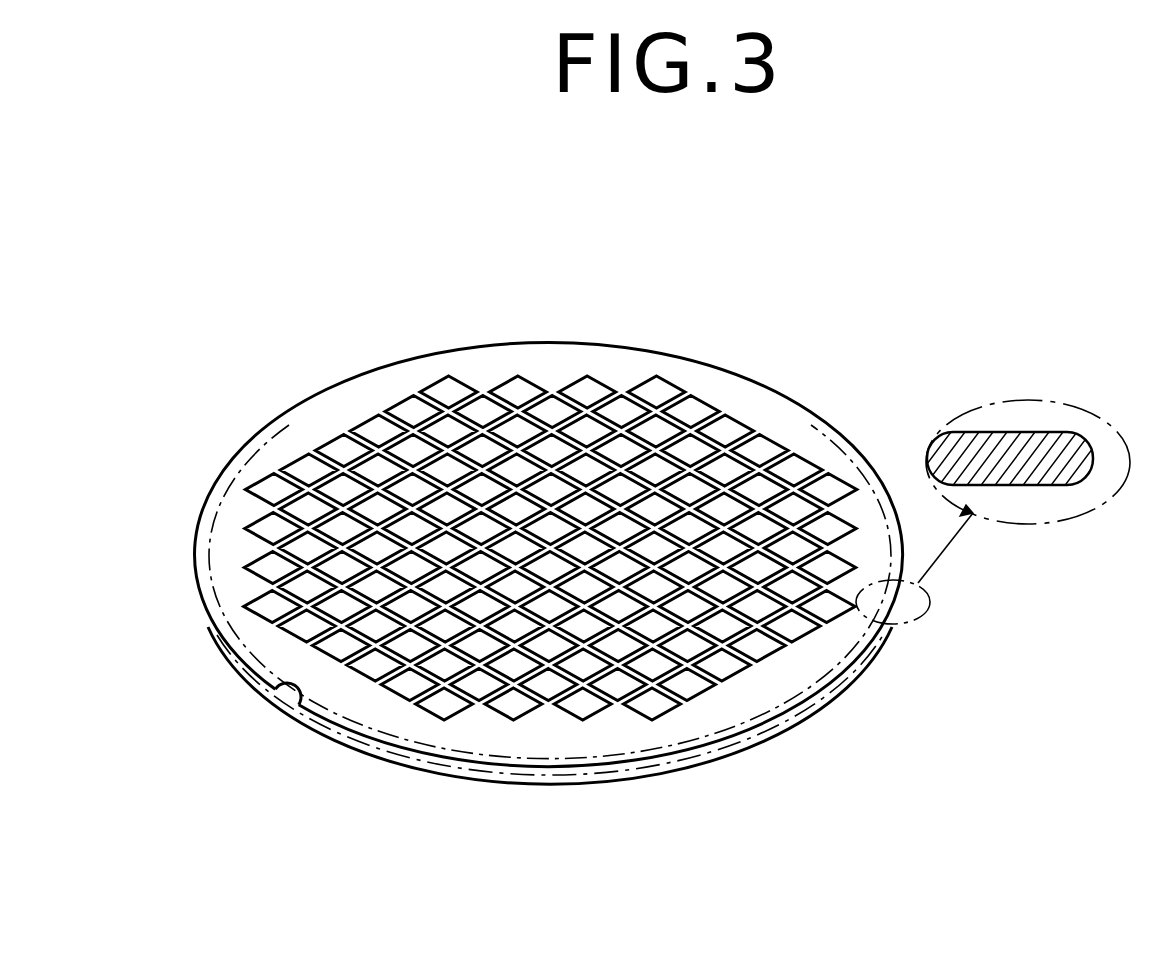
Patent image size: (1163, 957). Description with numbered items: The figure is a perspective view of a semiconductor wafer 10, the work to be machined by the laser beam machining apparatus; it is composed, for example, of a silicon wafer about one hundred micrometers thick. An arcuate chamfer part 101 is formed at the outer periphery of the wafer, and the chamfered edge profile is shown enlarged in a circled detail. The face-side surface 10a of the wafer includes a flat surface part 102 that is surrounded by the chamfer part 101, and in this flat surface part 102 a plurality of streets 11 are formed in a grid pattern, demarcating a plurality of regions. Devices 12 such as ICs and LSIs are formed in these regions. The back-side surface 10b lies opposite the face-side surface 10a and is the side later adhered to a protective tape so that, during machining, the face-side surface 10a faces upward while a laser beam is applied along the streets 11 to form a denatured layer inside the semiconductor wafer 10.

The semiconductor wafer 10 is at (600, 325).
The face-side surface 10a is at (760, 415).
The back-side surface 10b is at (565, 787).
The streets 11 is at (365, 612).
The devices 12 is at (512, 668).
The arcuate chamfer part 101 is at (1093, 452).
The flat surface part 102 is at (318, 425).